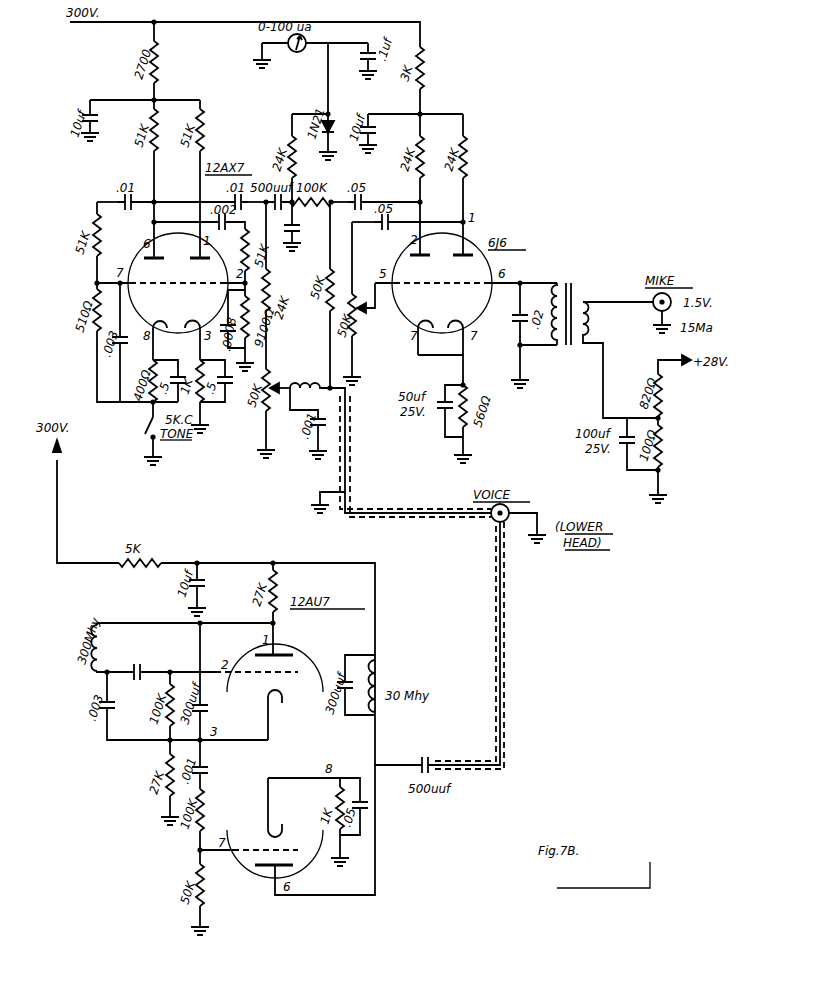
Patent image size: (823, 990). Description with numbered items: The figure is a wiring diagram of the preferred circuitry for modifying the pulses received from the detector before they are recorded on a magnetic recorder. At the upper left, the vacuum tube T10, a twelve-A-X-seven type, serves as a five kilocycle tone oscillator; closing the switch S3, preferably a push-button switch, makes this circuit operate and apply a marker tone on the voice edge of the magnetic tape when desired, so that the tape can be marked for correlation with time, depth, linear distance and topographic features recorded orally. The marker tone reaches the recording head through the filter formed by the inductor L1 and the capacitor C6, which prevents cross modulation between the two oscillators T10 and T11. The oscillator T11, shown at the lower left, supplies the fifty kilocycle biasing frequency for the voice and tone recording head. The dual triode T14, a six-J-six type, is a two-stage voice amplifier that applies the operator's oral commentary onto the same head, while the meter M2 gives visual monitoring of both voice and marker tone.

The vacuum tube T10 is at (178, 296).
The dual triode T14 is at (442, 294).
The oscillator T11 is at (269, 761).
The meter M2 is at (296, 51).
The filter inductor L1 is at (310, 375).
The filter capacitor C6 is at (298, 423).
The switch S3 is at (142, 441).